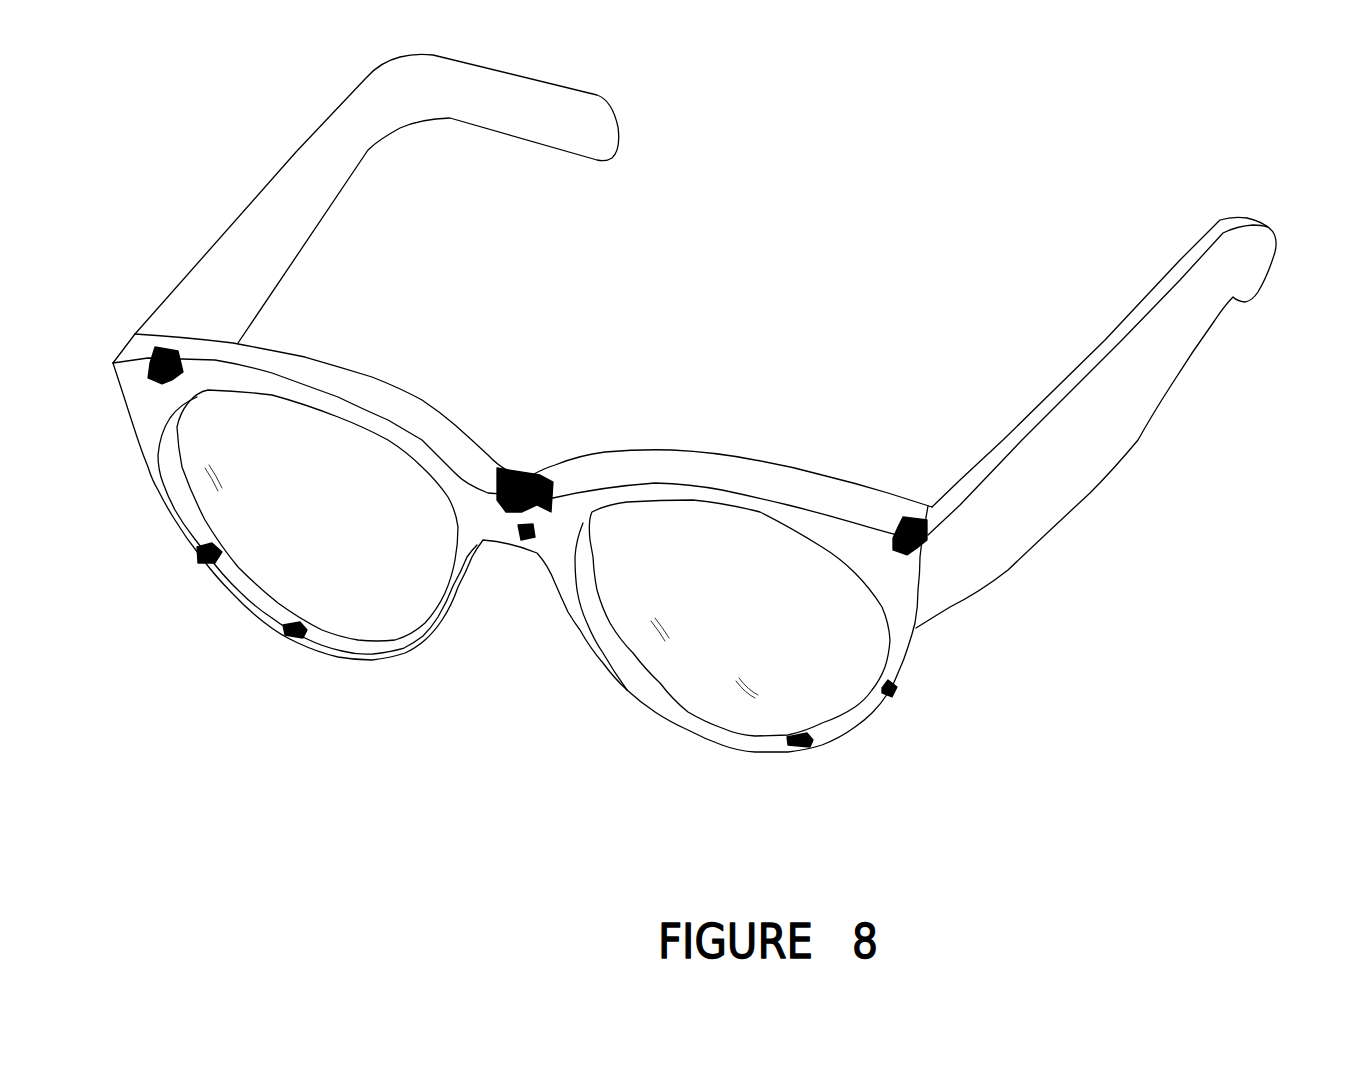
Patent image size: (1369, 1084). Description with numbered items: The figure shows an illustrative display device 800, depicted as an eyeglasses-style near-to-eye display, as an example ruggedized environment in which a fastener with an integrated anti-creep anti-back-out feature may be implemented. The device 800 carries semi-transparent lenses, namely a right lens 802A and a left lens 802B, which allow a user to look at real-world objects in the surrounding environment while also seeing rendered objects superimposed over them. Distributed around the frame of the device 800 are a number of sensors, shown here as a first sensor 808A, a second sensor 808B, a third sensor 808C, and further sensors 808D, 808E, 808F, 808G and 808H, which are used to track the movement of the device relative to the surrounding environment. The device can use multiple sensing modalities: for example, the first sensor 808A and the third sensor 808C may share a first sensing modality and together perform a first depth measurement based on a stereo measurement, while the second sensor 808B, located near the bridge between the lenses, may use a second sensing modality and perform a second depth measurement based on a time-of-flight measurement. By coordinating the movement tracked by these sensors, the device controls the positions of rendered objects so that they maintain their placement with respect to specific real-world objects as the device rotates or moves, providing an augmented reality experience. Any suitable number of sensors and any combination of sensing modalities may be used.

The display device 800 is at (1298, 103).
The right lens 802A is at (198, 486).
The left lens 802B is at (643, 644).
The first sensor 808A is at (143, 353).
The second sensor 808B is at (530, 468).
The third sensor 808C is at (900, 517).
The sensor 808D is at (195, 555).
The sensor 808E is at (288, 640).
The sensor 808F is at (527, 542).
The sensor 808G is at (806, 750).
The sensor 808H is at (895, 697).